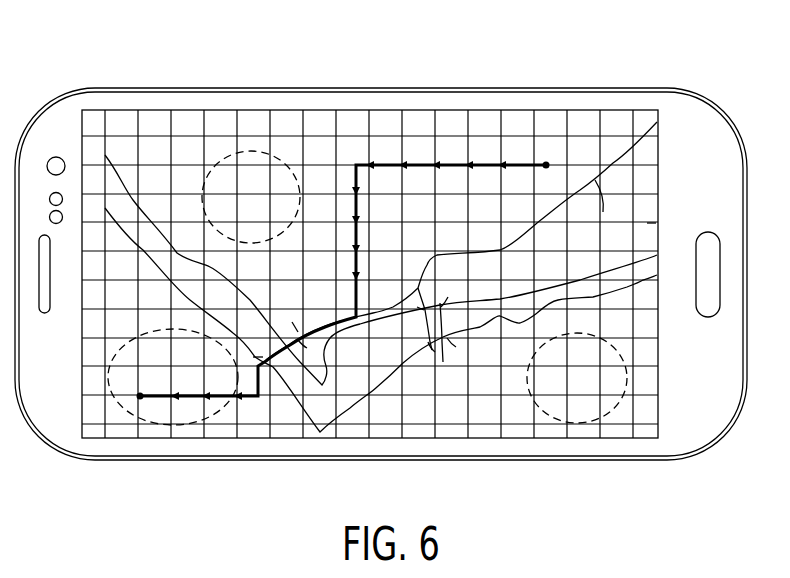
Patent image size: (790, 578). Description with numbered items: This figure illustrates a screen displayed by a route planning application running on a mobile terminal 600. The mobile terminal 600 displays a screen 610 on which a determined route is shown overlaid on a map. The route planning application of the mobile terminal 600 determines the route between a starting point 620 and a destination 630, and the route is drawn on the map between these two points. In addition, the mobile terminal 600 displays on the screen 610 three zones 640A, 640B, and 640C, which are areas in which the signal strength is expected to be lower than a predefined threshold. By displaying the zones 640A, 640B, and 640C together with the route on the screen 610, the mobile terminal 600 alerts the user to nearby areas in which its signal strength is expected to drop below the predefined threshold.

The mobile terminal 600 is at (612, 88).
The screen 610 is at (452, 125).
The starting point 620 is at (547, 162).
The destination 630 is at (139, 399).
The zone 640A is at (224, 154).
The zone 640B is at (597, 424).
The zone 640C is at (187, 427).